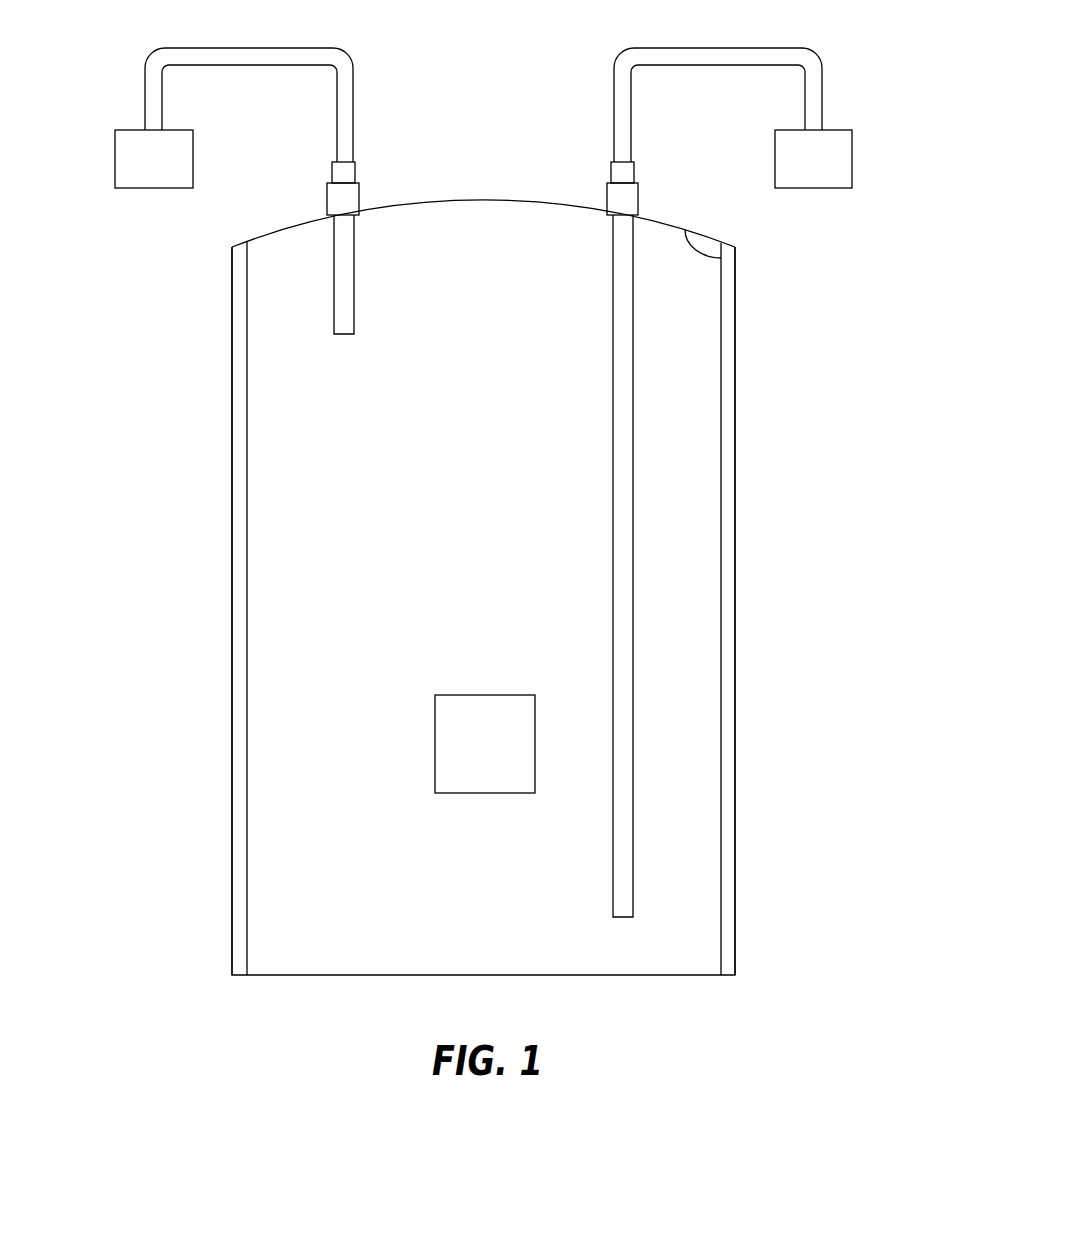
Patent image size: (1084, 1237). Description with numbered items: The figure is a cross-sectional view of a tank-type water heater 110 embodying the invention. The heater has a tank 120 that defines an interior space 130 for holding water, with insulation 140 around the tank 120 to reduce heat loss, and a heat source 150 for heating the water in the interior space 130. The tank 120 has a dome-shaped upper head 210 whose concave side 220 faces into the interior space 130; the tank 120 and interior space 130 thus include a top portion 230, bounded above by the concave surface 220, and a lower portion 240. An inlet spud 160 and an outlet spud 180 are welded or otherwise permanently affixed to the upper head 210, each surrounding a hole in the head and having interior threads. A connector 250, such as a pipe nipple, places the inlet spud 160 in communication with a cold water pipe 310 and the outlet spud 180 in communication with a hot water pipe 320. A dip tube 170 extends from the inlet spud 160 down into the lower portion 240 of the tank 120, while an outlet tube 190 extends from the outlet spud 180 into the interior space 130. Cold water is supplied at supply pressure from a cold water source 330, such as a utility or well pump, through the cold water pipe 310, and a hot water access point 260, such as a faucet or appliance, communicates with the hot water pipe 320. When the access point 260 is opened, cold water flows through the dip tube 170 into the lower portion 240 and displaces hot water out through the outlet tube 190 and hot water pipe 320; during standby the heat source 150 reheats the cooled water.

The tank-type water heater 110 is at (166, 318).
The tank 120 is at (267, 491).
The interior space 130 is at (499, 571).
The insulation 140 is at (728, 432).
The heat source 150 is at (503, 749).
The inlet spud 160 is at (606, 197).
The dip tube 170 is at (613, 500).
The outlet spud 180 is at (360, 197).
The outlet tube 190 is at (355, 297).
The upper head 210 is at (668, 222).
The concave side 220 is at (735, 253).
The top portion 230 is at (670, 332).
The lower portion 240 is at (671, 781).
The connector 250 is at (330, 173).
The hot water access point 260 is at (172, 172).
The cold water pipe 310 is at (604, 80).
The hot water pipe 320 is at (368, 80).
The cold water source 330 is at (831, 172).